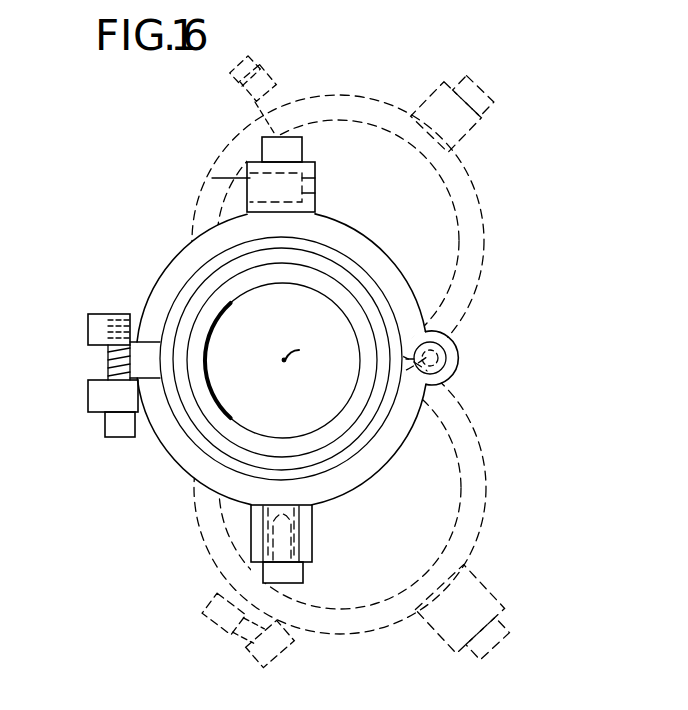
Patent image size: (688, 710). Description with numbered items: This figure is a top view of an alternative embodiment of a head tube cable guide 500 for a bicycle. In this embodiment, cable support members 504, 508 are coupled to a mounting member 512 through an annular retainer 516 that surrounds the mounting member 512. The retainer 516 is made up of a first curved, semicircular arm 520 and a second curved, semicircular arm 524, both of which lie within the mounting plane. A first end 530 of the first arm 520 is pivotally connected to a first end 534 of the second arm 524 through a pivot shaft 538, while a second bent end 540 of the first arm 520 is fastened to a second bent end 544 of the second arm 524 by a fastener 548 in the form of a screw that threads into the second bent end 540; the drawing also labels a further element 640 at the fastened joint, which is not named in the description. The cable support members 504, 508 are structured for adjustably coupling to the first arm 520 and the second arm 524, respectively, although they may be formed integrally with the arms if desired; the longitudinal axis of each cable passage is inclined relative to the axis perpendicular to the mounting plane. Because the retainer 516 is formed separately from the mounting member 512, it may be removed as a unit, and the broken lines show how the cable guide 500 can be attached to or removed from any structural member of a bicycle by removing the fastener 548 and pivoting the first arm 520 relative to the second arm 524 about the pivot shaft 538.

The head tube cable guide 500 is at (158, 238).
The cable support member 504 is at (250, 160).
The cable support member 508 is at (252, 542).
The mounting member 512 is at (272, 434).
The annular retainer 516 is at (191, 490).
The first curved arm 520 is at (349, 231).
The second curved arm 524 is at (352, 488).
The first end of first arm 530 is at (410, 302).
The first end of second arm 534 is at (414, 418).
The pivot shaft 538 is at (446, 360).
The second bent end of first arm 540 is at (252, 55).
The second bent end of second arm 544 is at (92, 420).
The fastener 548 is at (128, 440).
The clamp bolt head 640 is at (96, 312).